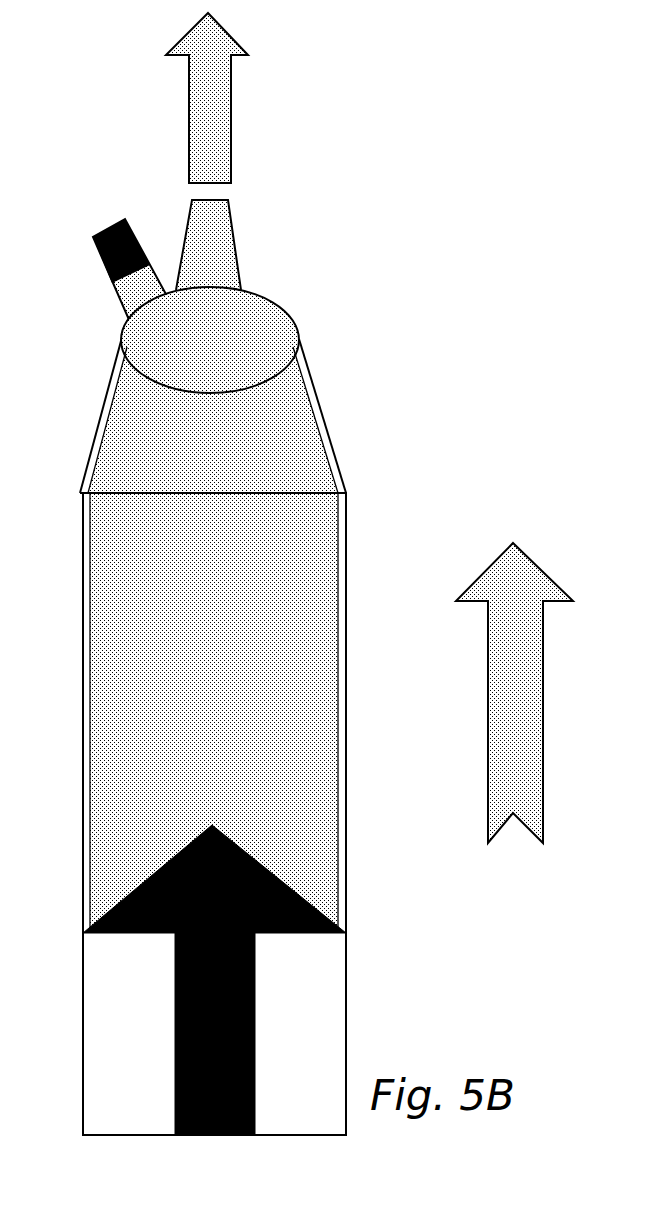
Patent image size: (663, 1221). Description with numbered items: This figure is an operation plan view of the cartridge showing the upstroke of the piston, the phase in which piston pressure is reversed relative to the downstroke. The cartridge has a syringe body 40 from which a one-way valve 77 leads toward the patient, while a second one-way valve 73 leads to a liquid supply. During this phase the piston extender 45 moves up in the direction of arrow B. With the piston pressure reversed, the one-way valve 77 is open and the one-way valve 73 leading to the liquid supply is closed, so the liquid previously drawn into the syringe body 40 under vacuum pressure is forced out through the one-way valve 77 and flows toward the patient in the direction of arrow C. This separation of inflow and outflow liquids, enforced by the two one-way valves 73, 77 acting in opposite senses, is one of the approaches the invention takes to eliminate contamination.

The syringe body 40 is at (337, 698).
The piston extender 45 is at (288, 878).
The one-way valve 73 is at (102, 265).
The one-way valve 77 is at (228, 272).
The arrow C is at (232, 128).
The arrow B is at (487, 738).